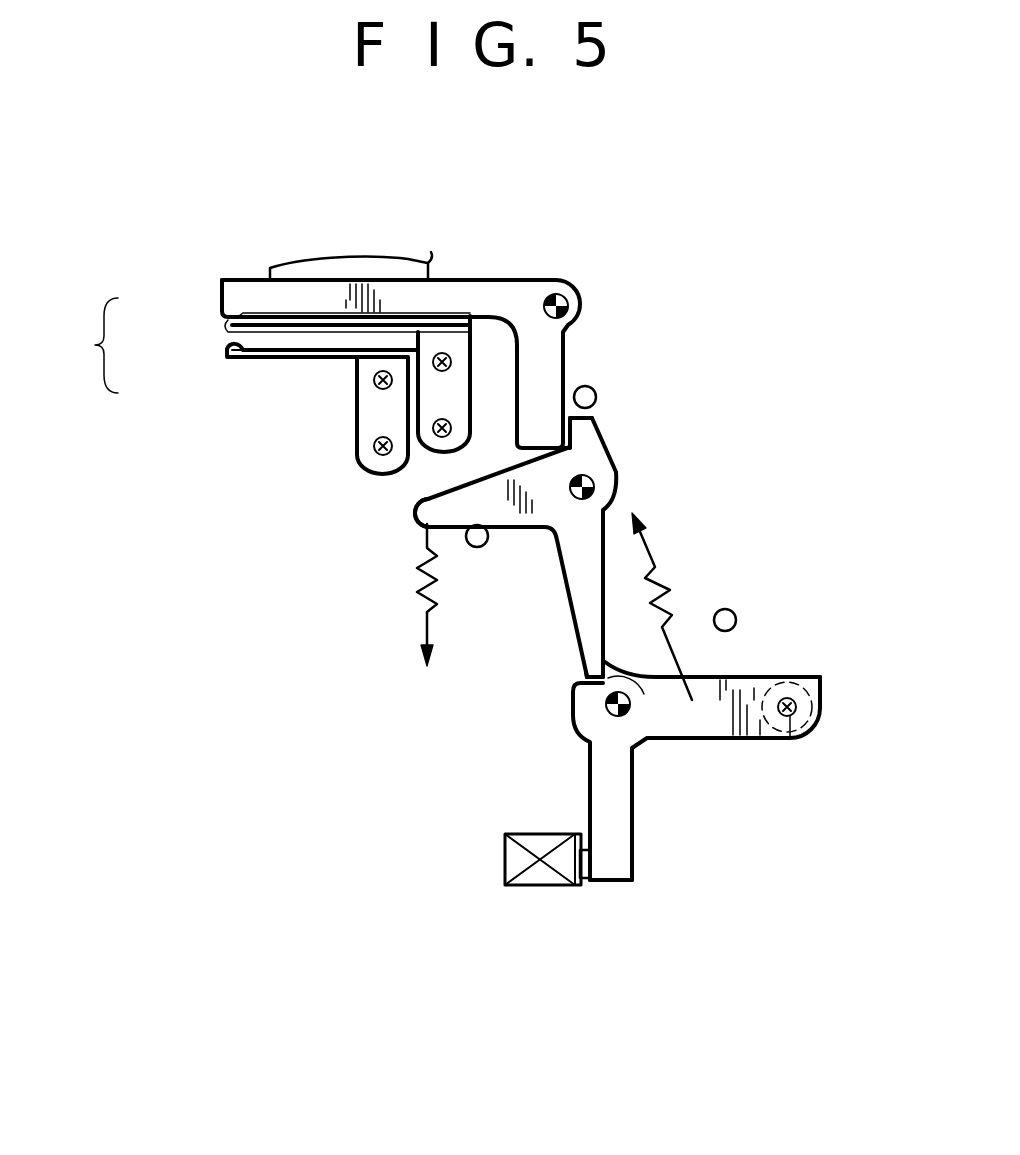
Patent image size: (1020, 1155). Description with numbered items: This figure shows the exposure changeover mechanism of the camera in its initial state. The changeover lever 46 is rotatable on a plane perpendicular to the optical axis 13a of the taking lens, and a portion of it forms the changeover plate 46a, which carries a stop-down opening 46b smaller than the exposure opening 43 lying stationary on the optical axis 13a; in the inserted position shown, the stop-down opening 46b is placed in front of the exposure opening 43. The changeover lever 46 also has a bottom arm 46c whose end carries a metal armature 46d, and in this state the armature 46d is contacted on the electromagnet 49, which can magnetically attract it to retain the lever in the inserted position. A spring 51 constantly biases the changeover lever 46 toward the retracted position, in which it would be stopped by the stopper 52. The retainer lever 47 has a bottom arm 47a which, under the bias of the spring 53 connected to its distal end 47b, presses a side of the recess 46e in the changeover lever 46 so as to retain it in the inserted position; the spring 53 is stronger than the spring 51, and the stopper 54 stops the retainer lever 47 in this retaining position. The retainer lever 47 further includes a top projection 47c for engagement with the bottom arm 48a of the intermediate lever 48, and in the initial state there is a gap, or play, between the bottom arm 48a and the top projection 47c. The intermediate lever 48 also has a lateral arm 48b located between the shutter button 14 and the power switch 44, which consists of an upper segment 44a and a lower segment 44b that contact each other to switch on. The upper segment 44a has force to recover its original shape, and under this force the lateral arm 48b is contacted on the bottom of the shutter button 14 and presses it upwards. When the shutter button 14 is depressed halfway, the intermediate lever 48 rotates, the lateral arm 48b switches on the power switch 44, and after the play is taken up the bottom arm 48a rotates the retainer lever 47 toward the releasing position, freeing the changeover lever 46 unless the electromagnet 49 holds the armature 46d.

The optical axis 13a is at (786, 740).
The shutter button 14 is at (330, 262).
The exposure opening 43 is at (812, 731).
The power switch 44 is at (255, 385).
The upper segment 44a is at (227, 333).
The segment 44b is at (226, 357).
The changeover lever 46 is at (573, 707).
The changeover plate 46a is at (753, 677).
The stop-down opening 46b is at (815, 686).
The bottom arm 46c is at (618, 861).
The armature 46d is at (587, 884).
The recess 46e is at (649, 711).
The retainer lever 47 is at (612, 479).
The bottom arm 47a is at (590, 672).
The distal end 47b is at (413, 514).
The top projection 47c is at (596, 432).
The intermediate lever 48 is at (493, 280).
The bottom arm 48a is at (520, 438).
The lateral arm 48b is at (222, 297).
The electromagnet 49 is at (505, 860).
The spring 51 is at (663, 557).
The stopper 52 is at (727, 608).
The spring 53 is at (418, 572).
The stopper 54 is at (596, 388).